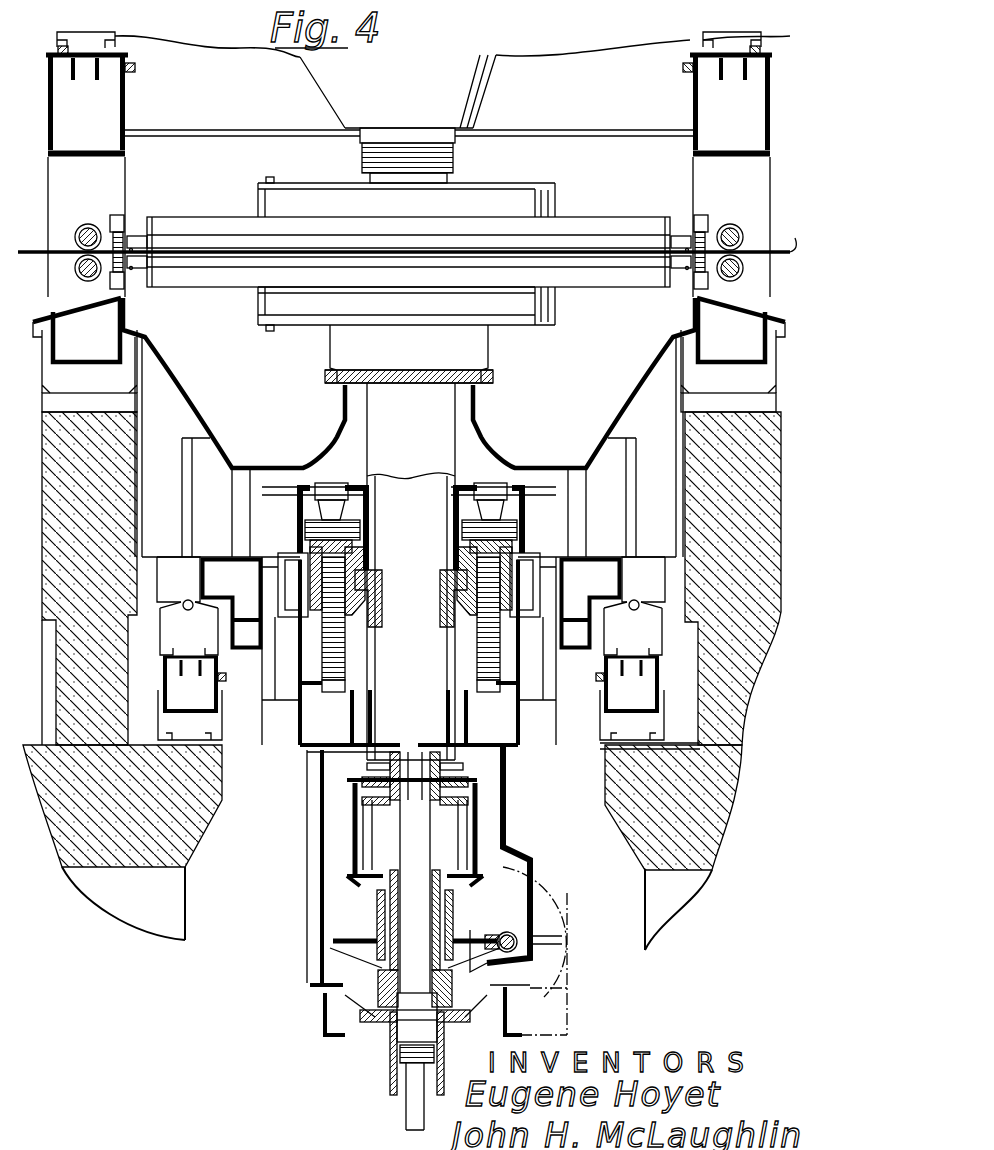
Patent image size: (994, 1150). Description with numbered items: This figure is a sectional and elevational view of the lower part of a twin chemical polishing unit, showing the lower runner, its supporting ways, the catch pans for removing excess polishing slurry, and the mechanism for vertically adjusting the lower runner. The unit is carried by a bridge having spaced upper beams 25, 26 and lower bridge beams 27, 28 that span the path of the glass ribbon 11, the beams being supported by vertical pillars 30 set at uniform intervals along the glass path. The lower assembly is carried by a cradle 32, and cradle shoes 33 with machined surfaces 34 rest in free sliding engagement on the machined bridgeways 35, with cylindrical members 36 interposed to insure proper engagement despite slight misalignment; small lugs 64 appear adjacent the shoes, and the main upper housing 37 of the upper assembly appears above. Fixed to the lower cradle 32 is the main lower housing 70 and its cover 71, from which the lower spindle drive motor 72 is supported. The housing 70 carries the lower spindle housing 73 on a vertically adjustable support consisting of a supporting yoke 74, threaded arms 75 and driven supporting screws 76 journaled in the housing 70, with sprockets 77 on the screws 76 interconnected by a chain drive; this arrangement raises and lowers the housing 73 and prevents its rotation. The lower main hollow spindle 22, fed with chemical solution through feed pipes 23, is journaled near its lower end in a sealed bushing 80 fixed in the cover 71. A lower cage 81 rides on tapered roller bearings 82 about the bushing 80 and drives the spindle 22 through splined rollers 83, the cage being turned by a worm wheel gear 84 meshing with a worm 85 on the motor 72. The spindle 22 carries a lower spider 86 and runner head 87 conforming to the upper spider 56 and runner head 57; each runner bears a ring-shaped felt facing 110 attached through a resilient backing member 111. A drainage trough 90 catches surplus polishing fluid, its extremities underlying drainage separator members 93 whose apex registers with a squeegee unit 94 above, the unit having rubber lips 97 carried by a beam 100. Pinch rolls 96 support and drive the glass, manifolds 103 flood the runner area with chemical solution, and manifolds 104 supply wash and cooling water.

The glass ribbon 11 is at (407, 235).
The lower main hollow spindle 22 is at (418, 852).
The feed pipes 23 is at (406, 1120).
The upper beam 25 is at (128, 112).
The upper beam 26 is at (692, 115).
The lower bridge beam 27 is at (160, 690).
The lower bridge beam 28 is at (606, 705).
The vertical pillars 30 is at (178, 896).
The lower cradle 32 is at (172, 563).
The cradle shoes 33 is at (115, 40).
The machined surfaces 34 is at (120, 68).
The machined bridgeways 35 is at (58, 52).
The cylindrical members 36 is at (188, 600).
The main upper housing 37 is at (482, 95).
The upper spider 56 is at (498, 183).
The upper runner head 57 is at (575, 217).
The lug 64 is at (683, 70).
The main lower housing 70 is at (528, 505).
The cover 71 is at (302, 1000).
The lower spindle drive motor 72 is at (548, 918).
The lower spindle housing 73 is at (412, 485).
The supporting yoke 74 is at (382, 612).
The threaded arms 75 is at (352, 612).
The driven supporting screws 76 is at (345, 655).
The sprockets 77 is at (300, 530).
The sealed bushing 80 is at (388, 1030).
The lower cage 81 is at (318, 896).
The tapered roller bearings 82 is at (388, 875).
The splined rollers 83 is at (462, 780).
The worm wheel gear 84 is at (500, 932).
The worm 85 is at (523, 915).
The lower spider 86 is at (300, 325).
The lower runner head 87 is at (240, 292).
The drainage trough 90 is at (205, 436).
The drainage separator members 93 is at (128, 305).
The upper squeegee unit 94 is at (120, 240).
The pinch rolls 96 is at (84, 248).
The rubber lips 97 is at (133, 262).
The beam 100 is at (117, 216).
The manifolds 103 is at (135, 243).
The manifolds 104 is at (735, 280).
The felt facing 110 is at (412, 252).
The resilient backing member 111 is at (510, 262).